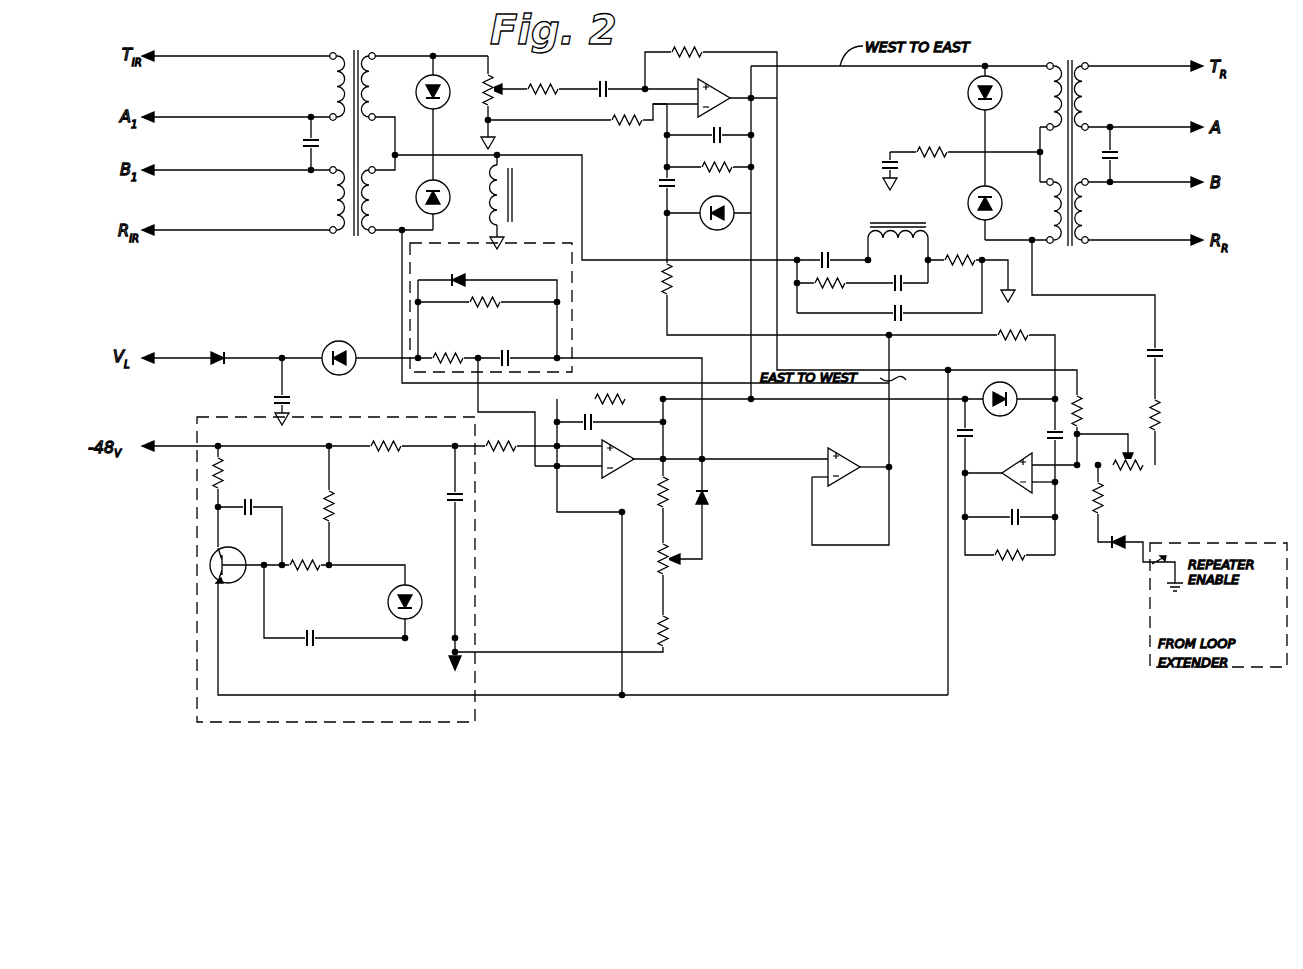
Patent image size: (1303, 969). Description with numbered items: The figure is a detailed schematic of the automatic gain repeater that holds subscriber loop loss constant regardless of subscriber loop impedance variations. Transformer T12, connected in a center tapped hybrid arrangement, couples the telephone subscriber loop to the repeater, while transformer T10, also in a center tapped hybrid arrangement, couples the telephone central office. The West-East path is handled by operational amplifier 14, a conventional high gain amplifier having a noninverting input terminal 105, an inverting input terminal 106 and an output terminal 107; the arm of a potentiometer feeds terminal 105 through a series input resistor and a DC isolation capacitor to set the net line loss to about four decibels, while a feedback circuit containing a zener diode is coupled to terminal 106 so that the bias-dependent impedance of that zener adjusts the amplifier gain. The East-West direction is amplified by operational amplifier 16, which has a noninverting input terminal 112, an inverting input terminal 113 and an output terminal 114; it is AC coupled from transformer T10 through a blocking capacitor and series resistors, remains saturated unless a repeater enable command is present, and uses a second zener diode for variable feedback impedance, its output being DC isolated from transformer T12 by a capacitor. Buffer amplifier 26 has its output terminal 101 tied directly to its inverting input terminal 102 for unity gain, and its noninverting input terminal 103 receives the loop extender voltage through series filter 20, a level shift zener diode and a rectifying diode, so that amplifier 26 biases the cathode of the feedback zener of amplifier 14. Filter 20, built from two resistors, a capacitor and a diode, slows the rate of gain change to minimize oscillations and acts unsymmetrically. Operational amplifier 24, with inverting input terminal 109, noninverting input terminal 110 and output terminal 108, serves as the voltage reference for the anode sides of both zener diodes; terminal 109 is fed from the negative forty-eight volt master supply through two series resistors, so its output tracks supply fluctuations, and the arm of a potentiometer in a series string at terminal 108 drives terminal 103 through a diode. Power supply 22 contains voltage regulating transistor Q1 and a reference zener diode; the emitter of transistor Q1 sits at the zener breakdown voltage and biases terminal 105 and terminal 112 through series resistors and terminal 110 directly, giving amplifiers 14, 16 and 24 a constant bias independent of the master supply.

The operational amplifier 14 is at (722, 87).
The operational amplifier 16 is at (1008, 478).
The series filter 20 is at (574, 316).
The power supply 22 is at (423, 722).
The operational amplifier 24 is at (617, 473).
The buffer amplifier 26 is at (842, 462).
The output terminal 101 is at (871, 478).
The inverting input terminal 102 is at (811, 469).
The noninverting input terminal 103 is at (765, 451).
The noninverting input terminal 105 is at (671, 84).
The inverting input terminal 106 is at (675, 101).
The output terminal 107 is at (752, 97).
The output terminal 108 is at (664, 469).
The inverting input terminal 109 is at (579, 444).
The noninverting input terminal 110 is at (568, 461).
The noninverting input terminal 112 is at (1053, 455).
The inverting input terminal 113 is at (1044, 485).
The output terminal 114 is at (983, 465).
The transformer T12 is at (353, 136).
The transformer T10 is at (1070, 145).
The voltage regulating transistor Q1 is at (222, 561).